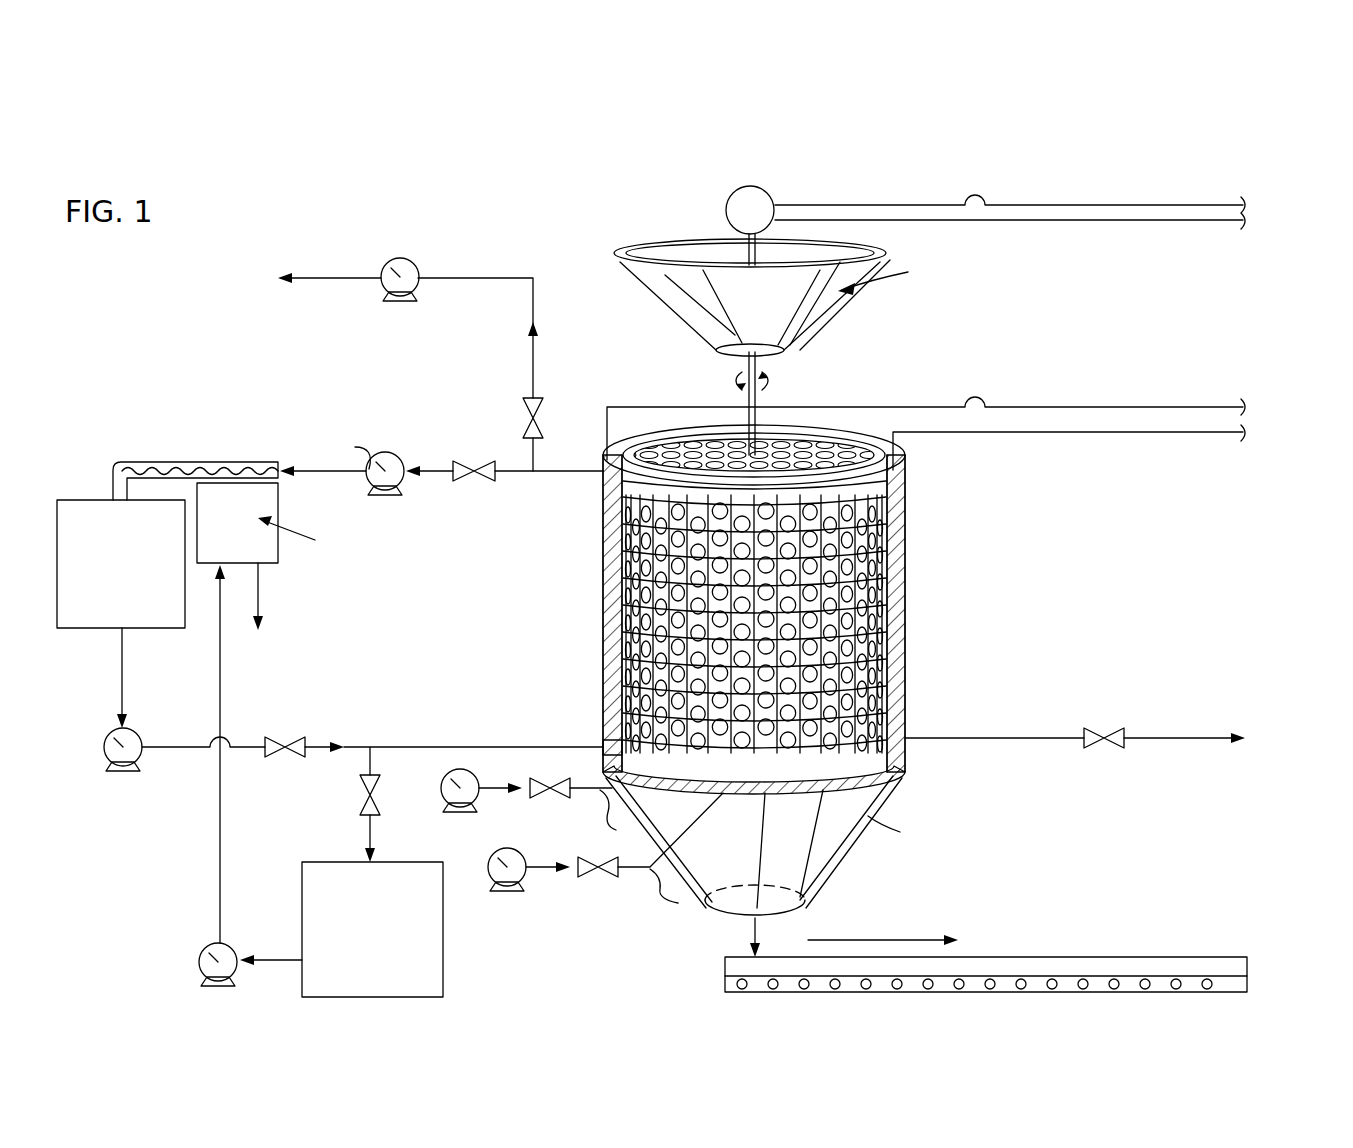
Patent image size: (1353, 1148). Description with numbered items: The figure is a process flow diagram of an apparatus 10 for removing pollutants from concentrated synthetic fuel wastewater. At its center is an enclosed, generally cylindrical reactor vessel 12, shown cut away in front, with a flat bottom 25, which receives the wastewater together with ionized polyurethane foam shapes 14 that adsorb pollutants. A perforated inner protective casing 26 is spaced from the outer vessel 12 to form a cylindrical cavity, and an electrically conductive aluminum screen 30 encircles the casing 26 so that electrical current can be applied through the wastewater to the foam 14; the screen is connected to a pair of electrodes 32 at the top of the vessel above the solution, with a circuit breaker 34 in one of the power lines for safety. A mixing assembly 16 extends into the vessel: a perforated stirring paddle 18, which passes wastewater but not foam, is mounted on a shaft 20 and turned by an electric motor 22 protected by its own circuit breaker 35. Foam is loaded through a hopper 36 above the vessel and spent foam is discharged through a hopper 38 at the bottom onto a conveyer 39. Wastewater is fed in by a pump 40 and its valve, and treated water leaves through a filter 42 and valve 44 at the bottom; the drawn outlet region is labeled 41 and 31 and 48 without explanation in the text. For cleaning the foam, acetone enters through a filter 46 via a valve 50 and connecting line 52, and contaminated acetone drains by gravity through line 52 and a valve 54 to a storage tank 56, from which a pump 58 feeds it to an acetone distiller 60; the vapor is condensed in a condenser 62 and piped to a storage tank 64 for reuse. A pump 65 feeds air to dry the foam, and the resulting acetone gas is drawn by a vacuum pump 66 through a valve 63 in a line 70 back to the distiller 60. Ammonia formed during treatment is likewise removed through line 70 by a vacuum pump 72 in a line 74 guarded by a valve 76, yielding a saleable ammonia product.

The apparatus 10 is at (978, 527).
The reactor vessel 12 is at (905, 655).
The polyurethane foam shapes 14 is at (815, 440).
The mixing assembly 16 is at (798, 355).
The stirring paddle 18 is at (680, 440).
The shaft 20 is at (746, 365).
The electric motor 22 is at (728, 210).
The flat bottom 25 is at (893, 771).
The perforated inner protective casing 26 is at (905, 515).
The electrically conductive screen 30 is at (603, 580).
The perforations 31 is at (905, 570).
The electrodes 32 is at (605, 490).
The circuit breaker 34 is at (977, 406).
The circuit breaker 35 is at (972, 204).
The hopper 36 is at (620, 262).
The hopper 38 is at (712, 887).
The conveyer 39 is at (1056, 957).
The pump 40 is at (497, 865).
The lower hopper for wasted foam removal 41 is at (707, 816).
The filter 42 is at (905, 738).
The valve 44 is at (1098, 726).
The filter 46 is at (605, 748).
The acetone pump 48 is at (134, 730).
The valve 50 is at (282, 760).
The connecting line 52 is at (386, 744).
The valve 54 is at (359, 789).
The storage tank 56 is at (307, 864).
The pump 58 is at (207, 953).
The acetone distiller 60 is at (280, 497).
The condenser 62 is at (145, 462).
The valve 63 is at (482, 482).
The storage tank 64 is at (187, 630).
The pump 65 is at (459, 778).
The vacuum pump 66 is at (393, 498).
The line 70 is at (553, 465).
The vacuum pump 72 is at (405, 260).
The line 74 is at (533, 368).
The valve 76 is at (523, 406).